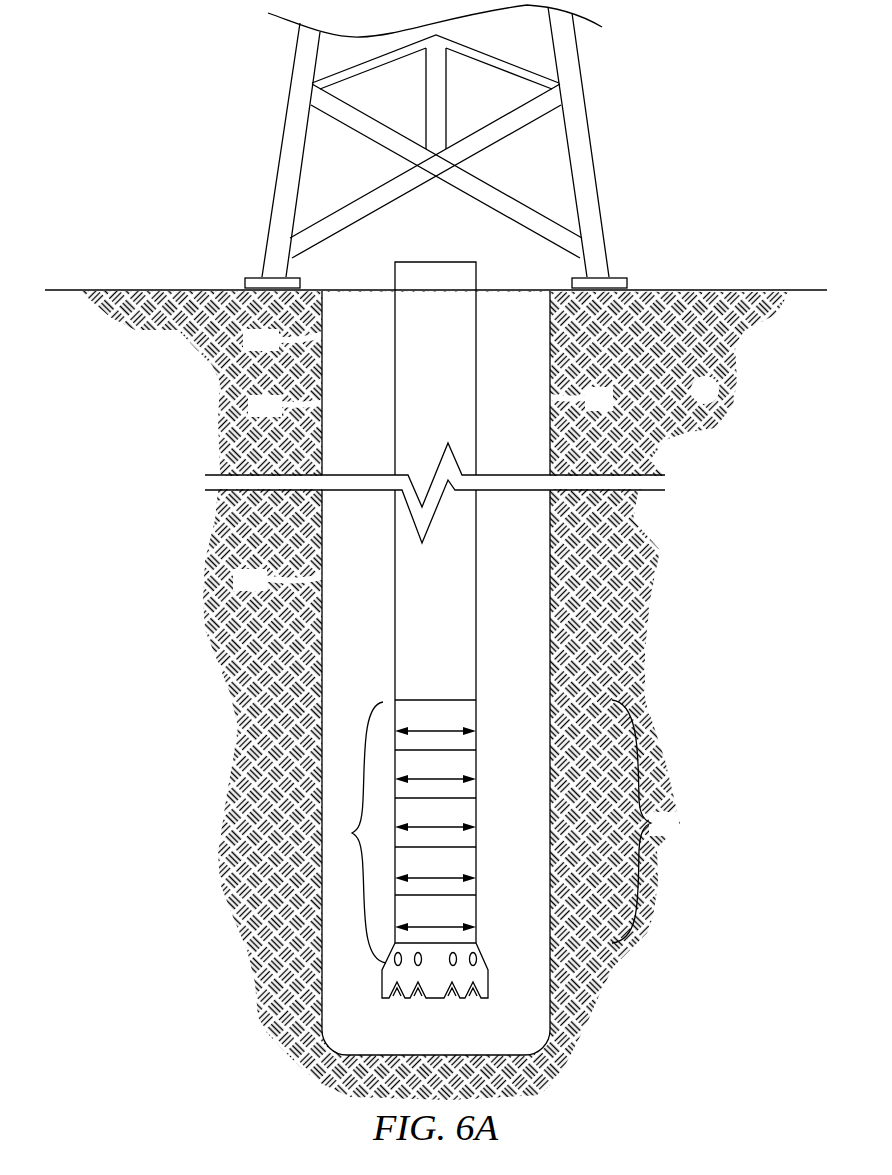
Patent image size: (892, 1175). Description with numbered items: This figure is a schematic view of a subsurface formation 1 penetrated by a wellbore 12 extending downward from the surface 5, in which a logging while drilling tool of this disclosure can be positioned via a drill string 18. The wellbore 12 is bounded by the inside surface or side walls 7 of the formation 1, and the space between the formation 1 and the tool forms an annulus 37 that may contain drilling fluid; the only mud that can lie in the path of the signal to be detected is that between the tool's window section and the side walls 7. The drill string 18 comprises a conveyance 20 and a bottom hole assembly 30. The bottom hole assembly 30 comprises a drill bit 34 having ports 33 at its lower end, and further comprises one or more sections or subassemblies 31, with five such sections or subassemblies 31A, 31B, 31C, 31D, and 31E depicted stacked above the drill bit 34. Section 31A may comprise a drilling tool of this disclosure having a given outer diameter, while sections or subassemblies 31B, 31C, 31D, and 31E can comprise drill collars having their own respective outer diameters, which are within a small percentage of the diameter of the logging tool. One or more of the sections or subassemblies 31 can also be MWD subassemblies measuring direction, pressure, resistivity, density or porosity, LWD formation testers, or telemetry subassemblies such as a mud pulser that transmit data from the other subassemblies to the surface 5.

The formation 1 is at (712, 400).
The surface 5 is at (693, 291).
The side walls 7 is at (552, 364).
The wellbore 12 is at (343, 330).
The drill string 18 is at (418, 274).
The conveyance 20 is at (393, 393).
The bottom hole assembly 30 is at (357, 832).
The sections or subassemblies 31 is at (642, 821).
The section 31A is at (477, 724).
The section or subassembly 31B is at (477, 772).
The section or subassembly 31C is at (477, 820).
The section or subassembly 31D is at (477, 870).
The section or subassembly 31E is at (477, 919).
The ports 33 is at (415, 963).
The drill bit 34 is at (463, 988).
The annulus 37 is at (353, 576).